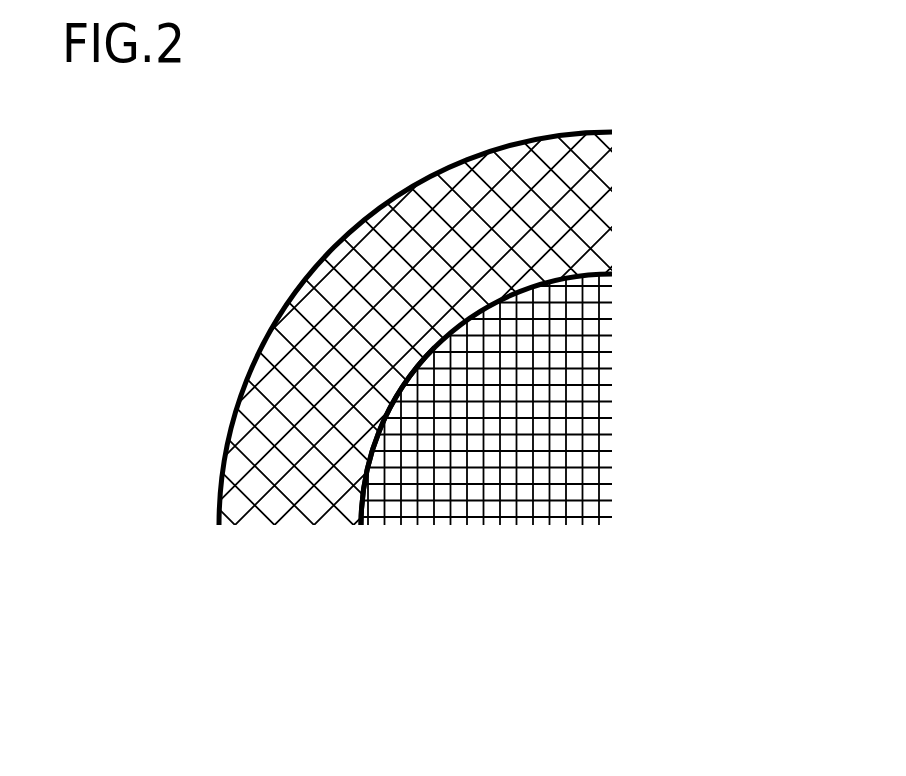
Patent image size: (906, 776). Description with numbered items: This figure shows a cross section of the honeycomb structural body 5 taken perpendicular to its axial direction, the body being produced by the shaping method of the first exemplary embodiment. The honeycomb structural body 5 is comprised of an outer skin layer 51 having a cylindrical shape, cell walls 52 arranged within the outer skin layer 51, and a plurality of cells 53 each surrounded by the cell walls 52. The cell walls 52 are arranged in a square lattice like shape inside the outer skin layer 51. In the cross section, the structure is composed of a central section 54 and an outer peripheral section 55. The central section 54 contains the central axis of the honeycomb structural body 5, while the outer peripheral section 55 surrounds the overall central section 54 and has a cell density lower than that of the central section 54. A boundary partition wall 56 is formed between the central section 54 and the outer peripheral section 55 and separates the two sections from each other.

The honeycomb structural body 5 is at (198, 230).
The outer skin layer 51 is at (350, 228).
The cell walls 52 is at (467, 615).
The cells 53 is at (453, 352).
The central section 54 is at (553, 378).
The outer peripheral section 55 is at (268, 470).
The boundary partition wall 56 is at (414, 395).